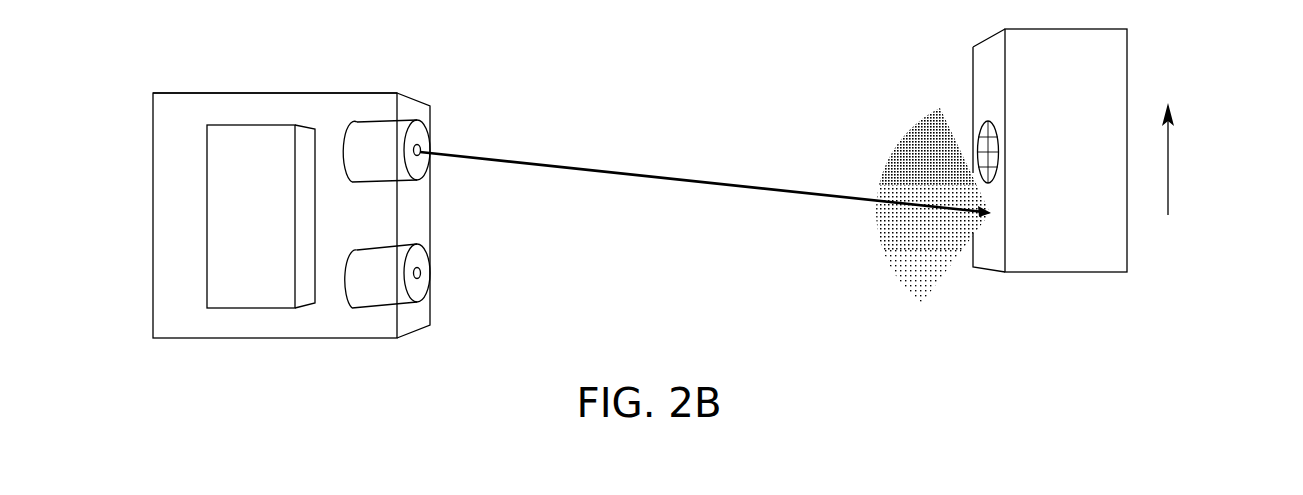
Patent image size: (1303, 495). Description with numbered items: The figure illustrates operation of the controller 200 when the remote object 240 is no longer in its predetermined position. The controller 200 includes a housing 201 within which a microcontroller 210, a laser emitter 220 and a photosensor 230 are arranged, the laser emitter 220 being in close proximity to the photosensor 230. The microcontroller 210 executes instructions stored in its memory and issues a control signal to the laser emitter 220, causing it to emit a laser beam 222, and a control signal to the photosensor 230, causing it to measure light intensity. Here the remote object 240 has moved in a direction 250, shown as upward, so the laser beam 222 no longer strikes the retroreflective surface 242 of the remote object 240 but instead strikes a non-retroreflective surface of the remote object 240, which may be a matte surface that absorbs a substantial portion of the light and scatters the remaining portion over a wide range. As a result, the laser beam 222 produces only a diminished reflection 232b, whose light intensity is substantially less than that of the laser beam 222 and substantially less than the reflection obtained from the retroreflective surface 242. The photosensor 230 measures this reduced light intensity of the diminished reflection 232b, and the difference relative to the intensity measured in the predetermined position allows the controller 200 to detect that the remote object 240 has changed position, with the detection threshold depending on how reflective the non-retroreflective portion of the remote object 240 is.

The controller 200 is at (153, 92).
The housing 201 is at (268, 92).
The microcontroller 210 is at (250, 212).
The laser emitter 220 is at (375, 140).
The laser beam 222 is at (641, 177).
The photosensor 230 is at (373, 285).
The diminished reflection 232b is at (887, 283).
The remote object 240 is at (973, 47).
The retroreflective surface 242 is at (979, 130).
The direction 250 is at (1170, 160).